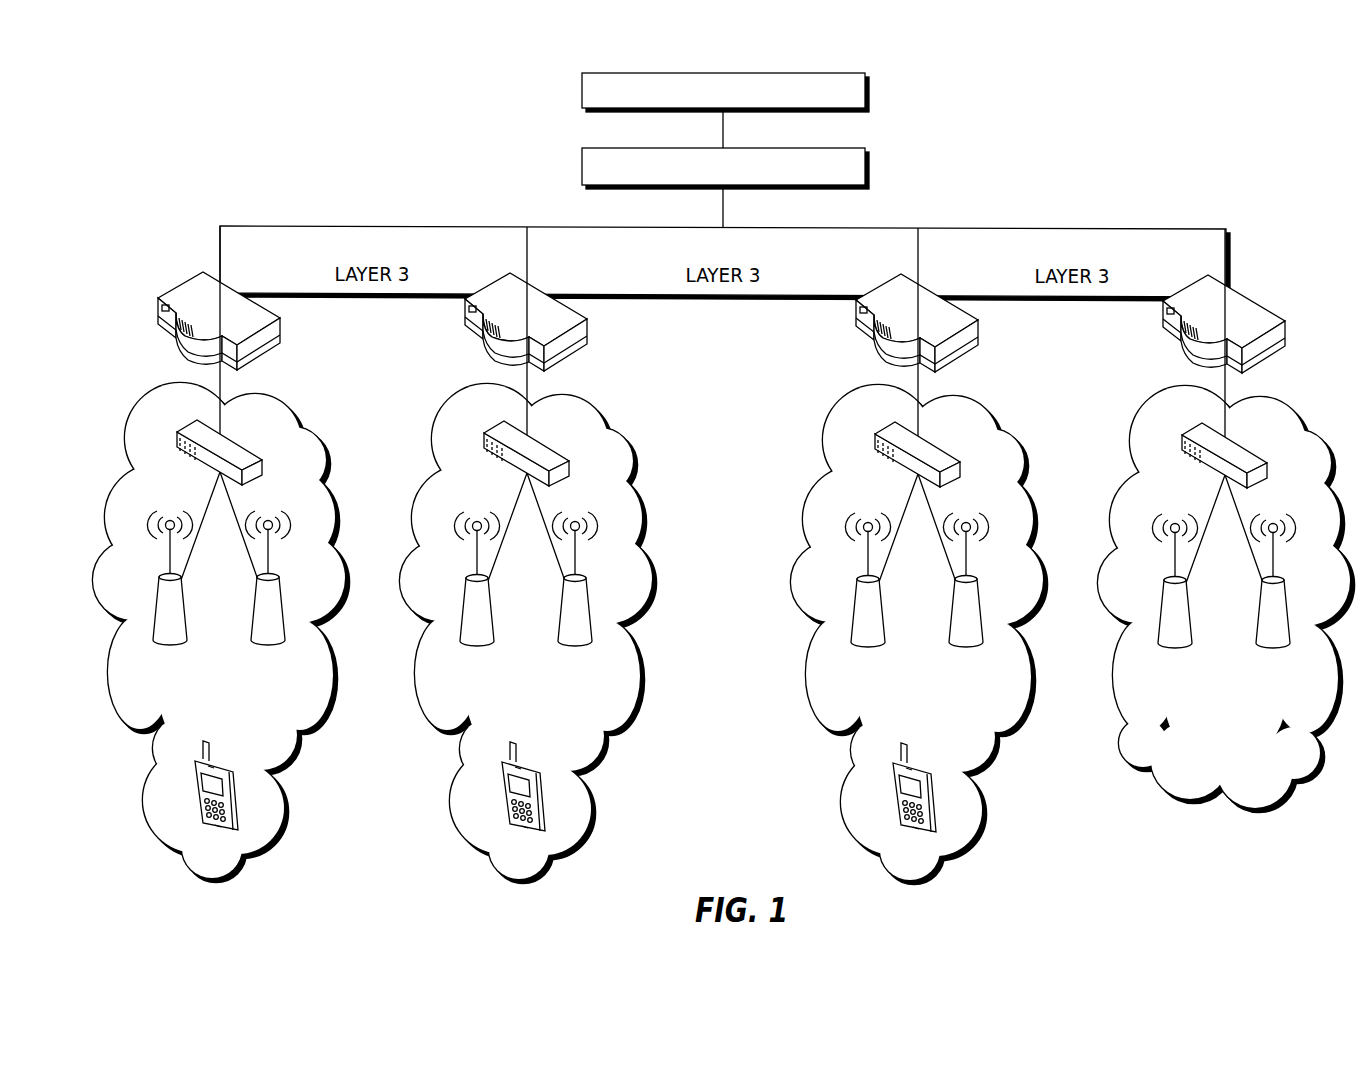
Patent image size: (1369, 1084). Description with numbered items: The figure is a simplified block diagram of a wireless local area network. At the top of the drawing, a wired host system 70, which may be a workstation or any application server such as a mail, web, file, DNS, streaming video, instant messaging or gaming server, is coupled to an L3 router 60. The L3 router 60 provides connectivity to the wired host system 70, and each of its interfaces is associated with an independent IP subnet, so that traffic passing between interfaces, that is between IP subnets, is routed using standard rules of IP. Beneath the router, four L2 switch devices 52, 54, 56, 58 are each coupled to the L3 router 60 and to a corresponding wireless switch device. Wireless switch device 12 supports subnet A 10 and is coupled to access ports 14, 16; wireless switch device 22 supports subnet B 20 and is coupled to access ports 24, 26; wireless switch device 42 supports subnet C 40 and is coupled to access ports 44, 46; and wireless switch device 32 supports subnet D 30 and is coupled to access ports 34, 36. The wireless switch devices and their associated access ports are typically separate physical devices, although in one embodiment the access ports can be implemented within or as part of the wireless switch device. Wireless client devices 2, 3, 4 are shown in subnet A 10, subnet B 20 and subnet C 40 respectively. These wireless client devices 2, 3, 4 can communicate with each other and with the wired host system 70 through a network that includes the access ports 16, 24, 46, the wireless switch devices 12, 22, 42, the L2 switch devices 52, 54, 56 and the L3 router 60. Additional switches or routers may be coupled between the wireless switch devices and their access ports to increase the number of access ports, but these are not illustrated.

The wired host system 70 is at (582, 84).
The L3 router 60 is at (582, 160).
The L2 switch device 52 is at (173, 340).
The L2 switch device 54 is at (509, 322).
The L2 switch device 56 is at (900, 323).
The L2 switch device 58 is at (1207, 324).
The wireless switch device 12 is at (196, 464).
The wireless switch device 22 is at (513, 457).
The wireless switch device 42 is at (904, 458).
The wireless switch device 32 is at (1211, 459).
The access port 14 is at (153, 615).
The access port 16 is at (283, 613).
The access port 24 is at (467, 579).
The access port 26 is at (586, 579).
The access port 44 is at (858, 580).
The access port 46 is at (977, 580).
The access port 34 is at (1165, 581).
The access port 36 is at (1284, 581).
The wireless client device 2 is at (195, 788).
The wireless client device 3 is at (506, 786).
The wireless client device 4 is at (897, 787).
The subnet A 10 is at (208, 721).
The subnet B 20 is at (528, 633).
The subnet C 40 is at (919, 634).
The subnet D 30 is at (1226, 599).